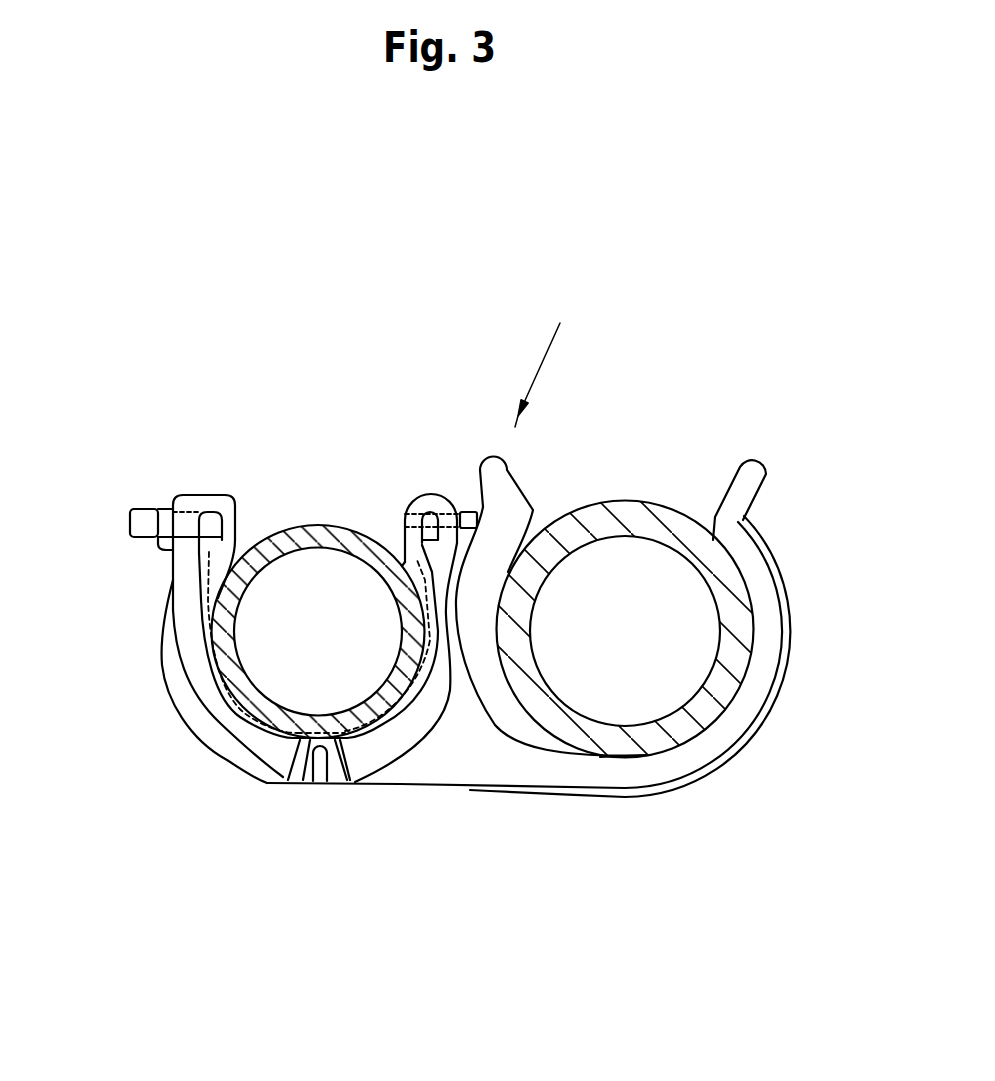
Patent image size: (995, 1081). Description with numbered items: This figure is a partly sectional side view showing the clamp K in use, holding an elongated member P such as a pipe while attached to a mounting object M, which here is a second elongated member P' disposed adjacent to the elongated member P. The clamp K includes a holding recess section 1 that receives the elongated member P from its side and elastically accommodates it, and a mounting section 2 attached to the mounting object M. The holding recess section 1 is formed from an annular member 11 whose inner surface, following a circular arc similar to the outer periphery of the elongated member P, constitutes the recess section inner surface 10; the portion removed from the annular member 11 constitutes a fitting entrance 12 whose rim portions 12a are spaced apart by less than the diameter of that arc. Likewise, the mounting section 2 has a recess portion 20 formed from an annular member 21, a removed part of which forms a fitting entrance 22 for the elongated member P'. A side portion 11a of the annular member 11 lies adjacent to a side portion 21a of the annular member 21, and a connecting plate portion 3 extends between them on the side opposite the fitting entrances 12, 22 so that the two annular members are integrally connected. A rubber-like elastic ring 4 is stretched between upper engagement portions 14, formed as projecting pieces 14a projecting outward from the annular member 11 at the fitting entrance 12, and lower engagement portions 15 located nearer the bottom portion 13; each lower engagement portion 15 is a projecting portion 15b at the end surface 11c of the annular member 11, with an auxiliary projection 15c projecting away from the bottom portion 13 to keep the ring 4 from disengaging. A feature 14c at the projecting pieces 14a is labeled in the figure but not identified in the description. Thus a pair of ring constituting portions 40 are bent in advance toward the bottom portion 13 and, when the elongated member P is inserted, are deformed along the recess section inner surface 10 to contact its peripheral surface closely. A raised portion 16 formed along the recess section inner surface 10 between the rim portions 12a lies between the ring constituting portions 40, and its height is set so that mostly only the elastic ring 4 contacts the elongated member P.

The holding recess section 1 is at (338, 620).
The recess section inner surface 10 is at (338, 620).
The annular member 11 is at (163, 607).
The side portion 11a is at (452, 657).
The end surface 11c is at (215, 717).
The fitting entrance 12 is at (362, 512).
The rim portion 12a is at (219, 493).
The bottom portion 13 is at (268, 750).
The upper engagement portion 14 is at (341, 424).
The projecting piece 14a is at (175, 505).
The pin head 14c is at (134, 507).
The lower engagement portion 15 is at (345, 819).
The projecting portion 15b is at (354, 778).
The auxiliary projection 15c is at (318, 785).
The raised portion 16 is at (203, 668).
The mounting section 2 is at (677, 637).
The annular member 21 is at (677, 637).
The side portion 21a is at (485, 642).
The recess portion 20 is at (644, 757).
The fitting entrance 22 is at (687, 492).
The connecting plate portion 3 is at (432, 767).
The rubber-like elastic ring 4 is at (253, 661).
The ring constituting portion 40 is at (213, 695).
The elongated member P is at (318, 572).
The elongated member P' is at (625, 573).
The mounting object M is at (620, 497).
The clamp K is at (540, 361).